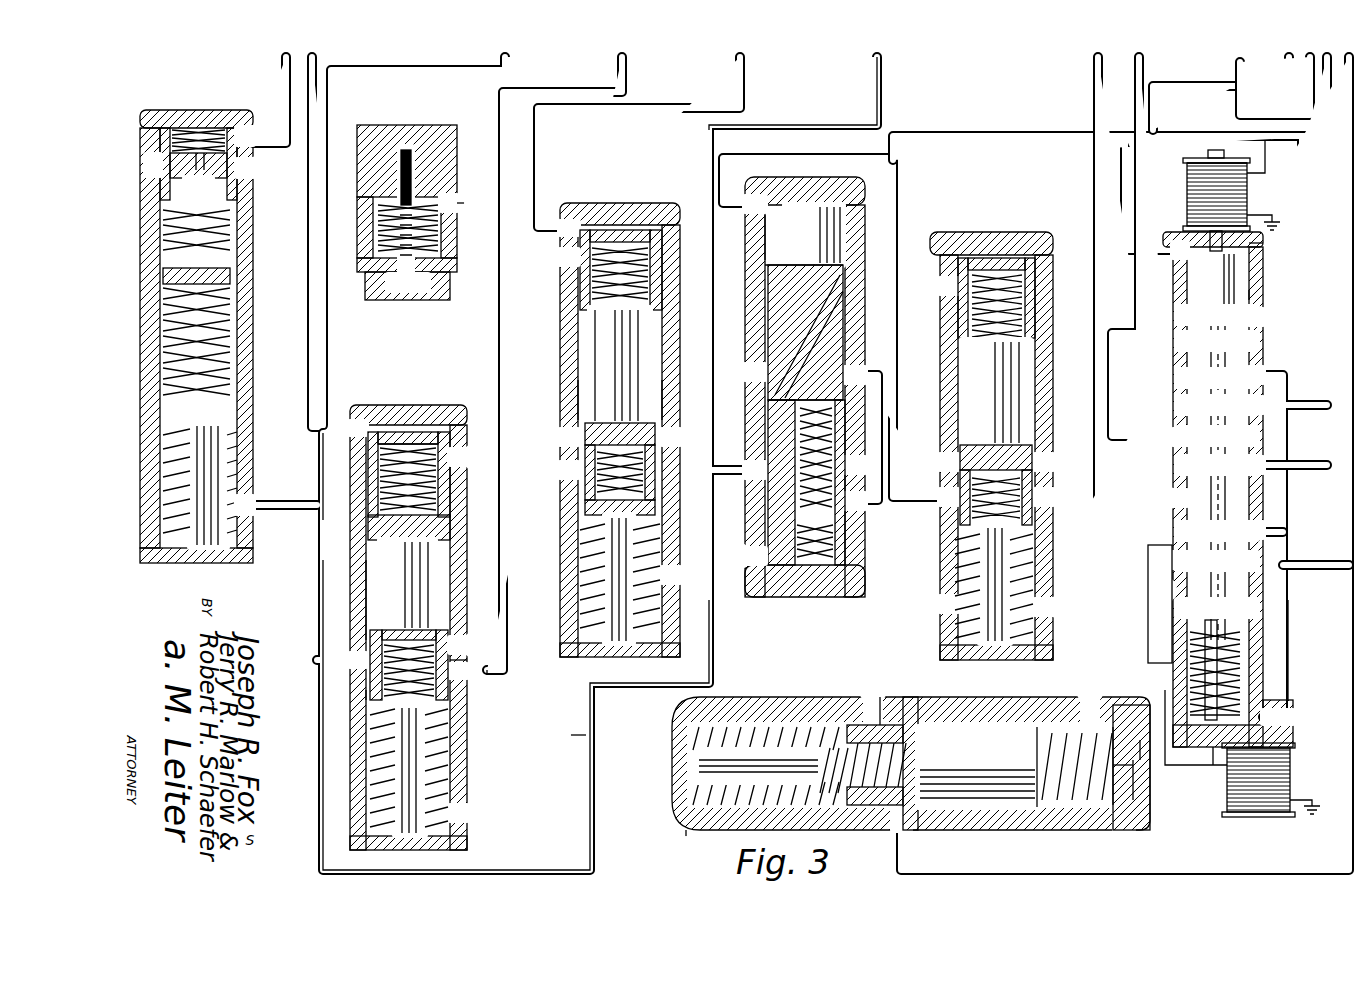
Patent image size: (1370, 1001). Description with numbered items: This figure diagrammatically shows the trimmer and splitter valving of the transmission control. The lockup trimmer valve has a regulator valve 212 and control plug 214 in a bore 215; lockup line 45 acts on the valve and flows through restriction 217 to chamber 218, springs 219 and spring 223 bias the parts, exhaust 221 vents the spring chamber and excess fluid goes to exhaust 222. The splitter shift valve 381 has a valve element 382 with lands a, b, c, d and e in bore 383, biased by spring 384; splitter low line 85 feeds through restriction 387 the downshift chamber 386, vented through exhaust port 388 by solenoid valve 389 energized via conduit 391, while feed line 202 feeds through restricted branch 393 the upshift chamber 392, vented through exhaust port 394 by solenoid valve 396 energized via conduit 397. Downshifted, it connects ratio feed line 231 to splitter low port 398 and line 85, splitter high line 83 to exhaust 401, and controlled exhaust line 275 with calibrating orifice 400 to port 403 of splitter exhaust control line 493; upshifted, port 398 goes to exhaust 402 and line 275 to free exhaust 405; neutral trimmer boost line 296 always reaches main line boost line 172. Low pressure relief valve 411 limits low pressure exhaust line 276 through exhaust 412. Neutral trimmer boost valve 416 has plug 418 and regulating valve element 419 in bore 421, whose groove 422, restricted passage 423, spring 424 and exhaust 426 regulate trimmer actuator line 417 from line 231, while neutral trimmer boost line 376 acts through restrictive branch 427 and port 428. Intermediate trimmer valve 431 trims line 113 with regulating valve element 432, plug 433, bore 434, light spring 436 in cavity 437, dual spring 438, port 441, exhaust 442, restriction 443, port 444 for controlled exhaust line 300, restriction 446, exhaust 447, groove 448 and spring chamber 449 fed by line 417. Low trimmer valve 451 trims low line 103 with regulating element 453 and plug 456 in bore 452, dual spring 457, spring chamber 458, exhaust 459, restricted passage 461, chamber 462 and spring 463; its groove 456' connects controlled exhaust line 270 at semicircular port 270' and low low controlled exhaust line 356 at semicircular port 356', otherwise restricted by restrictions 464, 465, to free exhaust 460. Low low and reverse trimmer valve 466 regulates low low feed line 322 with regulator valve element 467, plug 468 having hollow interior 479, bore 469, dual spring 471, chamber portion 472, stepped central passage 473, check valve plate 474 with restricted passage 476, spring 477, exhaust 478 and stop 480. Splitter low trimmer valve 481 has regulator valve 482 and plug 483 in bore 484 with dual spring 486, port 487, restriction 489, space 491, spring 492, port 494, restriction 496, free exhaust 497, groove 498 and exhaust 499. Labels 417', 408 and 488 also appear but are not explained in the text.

The regulator valve element 467 is at (175, 110).
The low low and reverse trimmer valve 466 is at (183, 108).
The spring 477 is at (175, 153).
The restricted passage 476 is at (200, 160).
The hollow interior of plug 479 is at (225, 215).
The stepped central passage 473 is at (150, 172).
The check valve plate 474 is at (242, 146).
The exhaust 478 is at (263, 179).
The plug 468 is at (235, 290).
The bore 469 is at (232, 340).
The dual spring 471 is at (240, 433).
The stop 480 is at (215, 480).
The closed chamber portion 472 is at (250, 525).
The low pressure exhaust line 276 is at (283, 72).
The low low feed line 322 is at (305, 100).
The low line 103 is at (455, 73).
The low low controlled exhaust line 356 is at (290, 547).
The trimmer boost pressure or actuator line 417 is at (509, 715).
The exhaust branch 417' is at (565, 716).
The controlled exhaust line 300 is at (873, 82).
The controlled exhaust line 270 is at (564, 378).
The semicircular port 270' is at (471, 693).
The intermediate clutch line 113 is at (744, 80).
The neutral trimmer boost line 376 is at (737, 160).
The ratio feed line 231 is at (897, 216).
The port 428 is at (880, 505).
The controlled exhaust line 275 is at (1094, 80).
The free exhaust 405 is at (1124, 620).
The neutral trimmer boost line 296 is at (1143, 75).
The lockup line 45 is at (1287, 70).
The splitter low line 85 is at (1308, 88).
The splitter high line 83 is at (1322, 112).
The exhaust 221 is at (1055, 612).
The exhaust 401 is at (1292, 376).
The splitter low port 398 is at (1172, 464).
The conduit 408 is at (1292, 531).
The splitter exhaust control line 493 is at (1289, 650).
The low pressure relief valve 411 is at (405, 128).
The exhaust 412 is at (480, 215).
The low trimmer valve 451 is at (405, 404).
The restricted passage 461 is at (432, 434).
The chamber 462 is at (380, 480).
The regulating element 453 is at (375, 445).
The spring 463 is at (446, 516).
The exhaust 459 is at (474, 470).
The groove 456' is at (407, 584).
The bore 452 is at (366, 605).
The plug 456 is at (423, 659).
The free exhaust 460 is at (466, 659).
The restriction 464 is at (452, 661).
The restriction 465 is at (372, 660).
The semicircular port 356' is at (340, 702).
The dual spring 457 is at (373, 735).
The closed spring chamber 458 is at (440, 780).
The intermediate trimmer valve 431 is at (612, 202).
The port 441 is at (566, 220).
The restriction 443 is at (632, 226).
The exhaust 442 is at (576, 284).
The regulating valve element 432 is at (582, 308).
The cavity 437 is at (596, 340).
The light spring 436 is at (595, 366).
The valve plug 433 is at (580, 386).
The bore 434 is at (580, 410).
The port 444 is at (570, 436).
The groove 448 is at (632, 422).
The restriction 446 is at (626, 442).
The exhaust 447 is at (582, 506).
The closed spring chamber 449 is at (605, 590).
The spring 438 is at (580, 546).
The neutral trimmer boost valve 416 is at (804, 175).
The restrictive branch 427 is at (762, 224).
The restricted passage 423 is at (806, 262).
The plug 418 is at (766, 278).
The regulating valve element 419 is at (776, 326).
The bore 421 is at (770, 356).
The groove 422 is at (798, 420).
The spring 424 is at (815, 566).
The exhaust 426 is at (745, 568).
The restriction 217 is at (992, 254).
The exhaust 222 is at (925, 298).
The regulator valve 212 is at (1028, 300).
The spring 223 is at (1022, 320).
The chamber 218 is at (1027, 344).
The control plug 214 is at (1020, 378).
The bore 215 is at (1032, 412).
The springs 219 is at (1022, 556).
The splitter low trimmer valve 481 is at (873, 678).
The free exhaust 497 is at (862, 688).
The restriction 496 is at (885, 690).
The dual spring 486 is at (790, 732).
The bore 484 is at (935, 795).
The port 494 is at (895, 822).
The plug 483 is at (950, 744).
The groove 498 is at (1012, 806).
The regulator valve 482 is at (1046, 748).
The exhaust port 488 is at (1079, 688).
The spring 492 is at (1082, 806).
The port 487 is at (1135, 832).
The restriction 489 is at (1140, 800).
The conduit 391 is at (1150, 780).
The space 491 is at (1132, 765).
The exhaust 499 is at (675, 852).
The splitter shift valve 381 is at (1262, 272).
The restriction 387 is at (1285, 706).
The land a is at (1200, 280).
The land b is at (1232, 347).
The land c is at (1200, 456).
The land d is at (1200, 536).
The land e is at (1200, 602).
The valve element 382 is at (1195, 362).
The bore 383 is at (1195, 386).
The restricted branch 393 is at (1174, 244).
The upshift chamber 392 is at (1256, 246).
The main line boost line 172 is at (1258, 292).
The exhaust 402 is at (1152, 496).
The port 403 is at (1173, 559).
The calibrating orifice 400 is at (1147, 640).
The spring 384 is at (1190, 662).
The downshift chamber 386 is at (1200, 690).
The exhaust port 394 is at (1218, 188).
The solenoid valve 396 is at (1186, 186).
The conduit 397 is at (1264, 165).
The feed line 202 is at (1195, 140).
The solenoid valve 389 is at (1238, 818).
The exhaust port 388 is at (1213, 747).